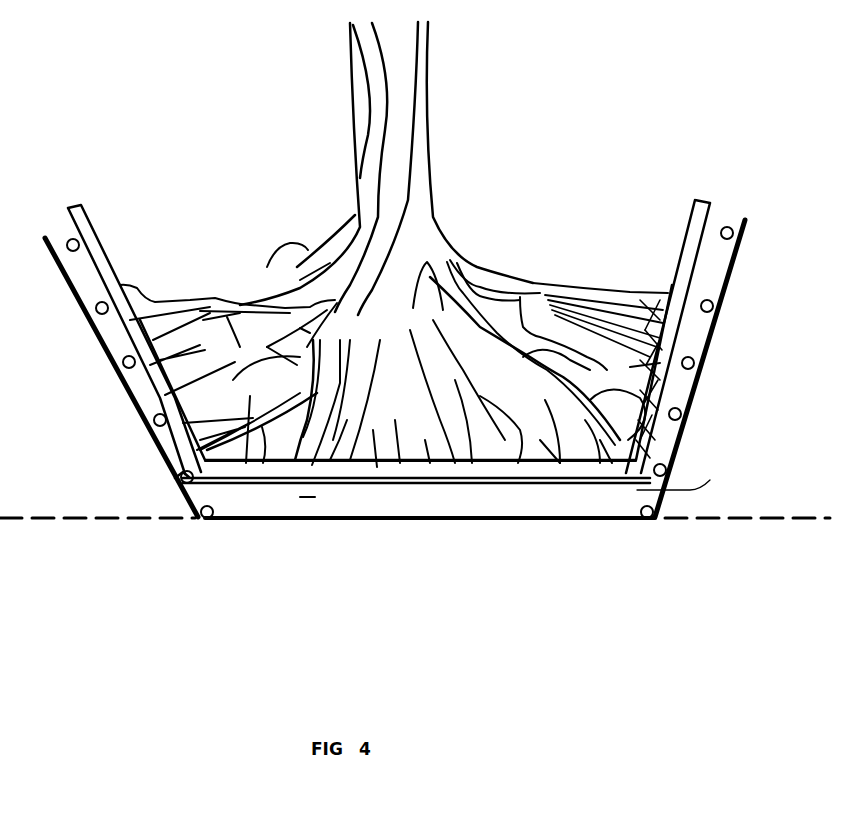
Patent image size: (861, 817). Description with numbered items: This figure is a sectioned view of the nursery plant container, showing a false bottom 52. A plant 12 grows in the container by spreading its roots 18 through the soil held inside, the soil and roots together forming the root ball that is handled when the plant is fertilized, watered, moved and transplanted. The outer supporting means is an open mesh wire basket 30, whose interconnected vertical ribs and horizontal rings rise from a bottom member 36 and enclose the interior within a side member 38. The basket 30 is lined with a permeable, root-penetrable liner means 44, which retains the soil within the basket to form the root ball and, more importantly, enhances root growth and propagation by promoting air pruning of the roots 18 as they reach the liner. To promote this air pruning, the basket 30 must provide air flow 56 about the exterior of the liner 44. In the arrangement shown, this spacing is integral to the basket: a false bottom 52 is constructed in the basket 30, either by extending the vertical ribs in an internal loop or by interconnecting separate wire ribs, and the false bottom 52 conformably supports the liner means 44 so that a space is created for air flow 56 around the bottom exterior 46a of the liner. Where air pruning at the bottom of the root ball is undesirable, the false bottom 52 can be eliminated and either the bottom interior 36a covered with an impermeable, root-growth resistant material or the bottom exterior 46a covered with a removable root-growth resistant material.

The plant 12 is at (365, 107).
The roots 18 is at (267, 267).
The outer supporting means (wire basket) 30 is at (690, 365).
The bottom member 36 is at (175, 471).
The bottom interior 36a is at (347, 455).
The side member 38 is at (97, 364).
The liner means 44 is at (93, 238).
The bottom exterior of liner 46a is at (422, 487).
The false bottom 52 is at (685, 482).
The air flow 56 is at (306, 497).